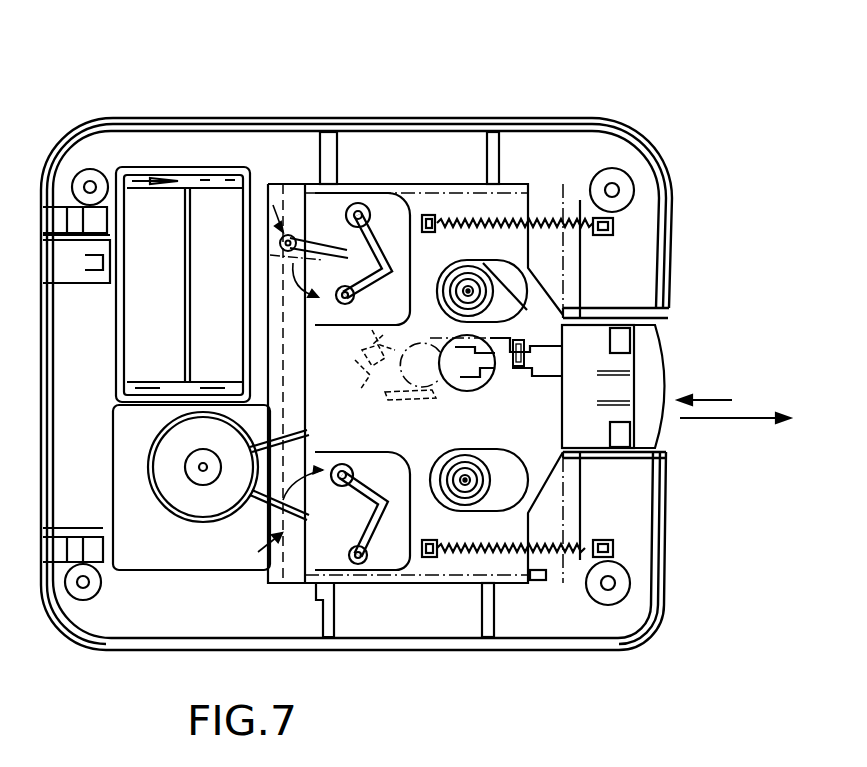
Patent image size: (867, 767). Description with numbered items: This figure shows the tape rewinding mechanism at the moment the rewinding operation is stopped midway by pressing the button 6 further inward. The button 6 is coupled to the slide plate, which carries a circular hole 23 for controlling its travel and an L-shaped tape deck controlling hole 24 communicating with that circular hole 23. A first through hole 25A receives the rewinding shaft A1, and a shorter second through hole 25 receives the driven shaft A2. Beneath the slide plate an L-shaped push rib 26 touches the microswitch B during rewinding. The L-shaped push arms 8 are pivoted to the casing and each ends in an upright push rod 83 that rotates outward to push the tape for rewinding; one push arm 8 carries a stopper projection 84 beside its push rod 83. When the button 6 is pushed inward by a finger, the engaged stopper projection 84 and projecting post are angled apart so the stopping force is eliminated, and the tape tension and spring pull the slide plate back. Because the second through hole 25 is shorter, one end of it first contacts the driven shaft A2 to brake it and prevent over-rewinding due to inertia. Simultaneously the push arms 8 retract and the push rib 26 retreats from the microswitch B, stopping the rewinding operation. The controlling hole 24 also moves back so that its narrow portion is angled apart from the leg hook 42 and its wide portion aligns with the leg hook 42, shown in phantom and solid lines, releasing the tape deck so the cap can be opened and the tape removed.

The button 6 is at (654, 388).
The push arm 8 is at (362, 210).
The circular hole 23 is at (457, 370).
The tape deck controlling hole 24 is at (562, 305).
The second through hole 25 is at (443, 262).
The first through hole 25A is at (512, 490).
The push rib 26 is at (420, 388).
The leg hook 42 is at (535, 362).
The push rod 83 is at (317, 296).
The stopper projection 84 is at (345, 298).
The rewinding shaft A1 is at (467, 490).
The driven shaft A2 is at (478, 275).
The microswitch B is at (370, 360).